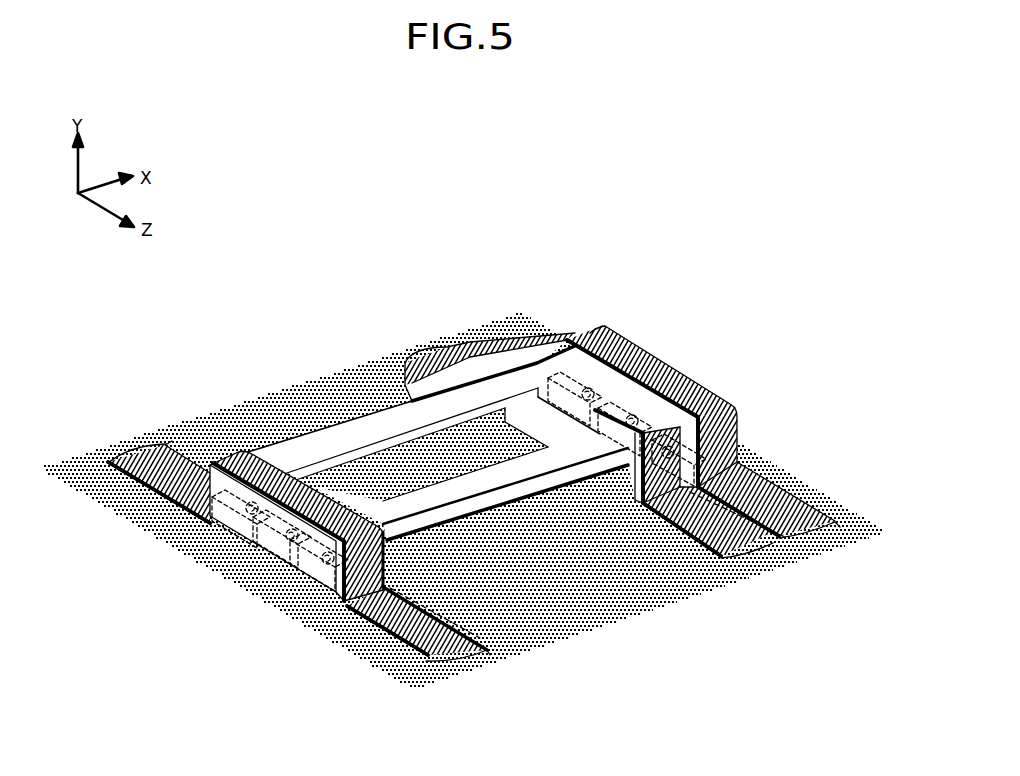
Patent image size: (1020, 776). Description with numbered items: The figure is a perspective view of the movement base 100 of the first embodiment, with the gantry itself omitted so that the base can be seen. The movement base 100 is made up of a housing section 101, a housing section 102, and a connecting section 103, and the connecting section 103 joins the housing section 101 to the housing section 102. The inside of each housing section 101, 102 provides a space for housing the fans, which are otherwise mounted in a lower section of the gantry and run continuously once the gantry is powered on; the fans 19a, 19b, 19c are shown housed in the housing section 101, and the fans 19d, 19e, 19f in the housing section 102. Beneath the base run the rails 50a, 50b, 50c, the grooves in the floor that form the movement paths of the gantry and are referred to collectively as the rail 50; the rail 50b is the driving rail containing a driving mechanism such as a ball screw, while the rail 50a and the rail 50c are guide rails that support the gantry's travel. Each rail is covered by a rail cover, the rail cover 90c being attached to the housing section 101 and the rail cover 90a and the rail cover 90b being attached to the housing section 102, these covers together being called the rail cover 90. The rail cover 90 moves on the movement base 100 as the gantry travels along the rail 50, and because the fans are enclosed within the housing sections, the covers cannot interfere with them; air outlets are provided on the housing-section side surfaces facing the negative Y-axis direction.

The movement base 100 is at (527, 266).
The housing section 101 is at (510, 463).
The housing section 102 is at (510, 463).
The connecting section 103 is at (448, 492).
The fan 19a is at (300, 580).
The fan 19b is at (266, 557).
The fan 19c is at (240, 522).
The fan 19d is at (706, 440).
The fan 19e is at (645, 412).
The fan 19f is at (592, 408).
The rail cover 90a is at (747, 478).
The rail cover 90b is at (670, 520).
The rail cover 90c is at (378, 622).
The rail 50a is at (806, 494).
The rail 50b is at (705, 548).
The rail 50c is at (410, 648).
The rail 50 is at (510, 532).
The rail cover 90 is at (490, 560).